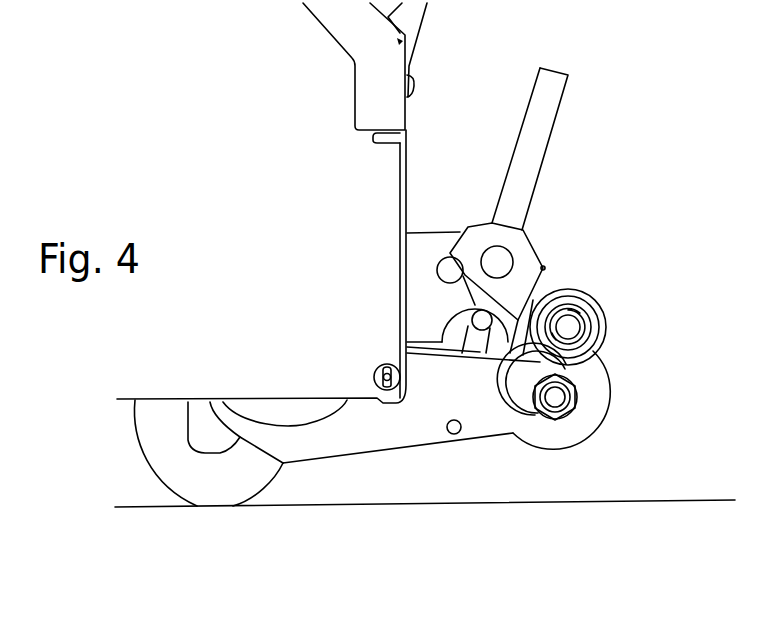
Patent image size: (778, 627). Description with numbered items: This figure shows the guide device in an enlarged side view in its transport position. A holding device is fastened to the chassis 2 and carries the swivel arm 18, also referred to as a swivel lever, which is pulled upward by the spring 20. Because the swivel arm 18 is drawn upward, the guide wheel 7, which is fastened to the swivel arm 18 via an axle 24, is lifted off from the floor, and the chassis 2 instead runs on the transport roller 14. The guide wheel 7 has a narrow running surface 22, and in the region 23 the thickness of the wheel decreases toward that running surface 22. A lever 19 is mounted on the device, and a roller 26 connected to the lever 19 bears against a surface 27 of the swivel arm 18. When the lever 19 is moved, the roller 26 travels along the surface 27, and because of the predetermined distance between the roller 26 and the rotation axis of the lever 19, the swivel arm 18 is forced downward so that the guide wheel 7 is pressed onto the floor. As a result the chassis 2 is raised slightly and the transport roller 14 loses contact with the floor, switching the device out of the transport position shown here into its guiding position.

The chassis 2 is at (400, 272).
The guide wheel 7 is at (594, 436).
The transport roller 14 is at (198, 474).
The swivel arm 18 is at (400, 428).
The lever 19 is at (557, 72).
The spring 20 is at (448, 250).
The running surface 22 is at (623, 400).
The region 23 is at (603, 428).
The axle 24 is at (558, 397).
The roller 26 is at (595, 300).
The surface 27 is at (543, 266).